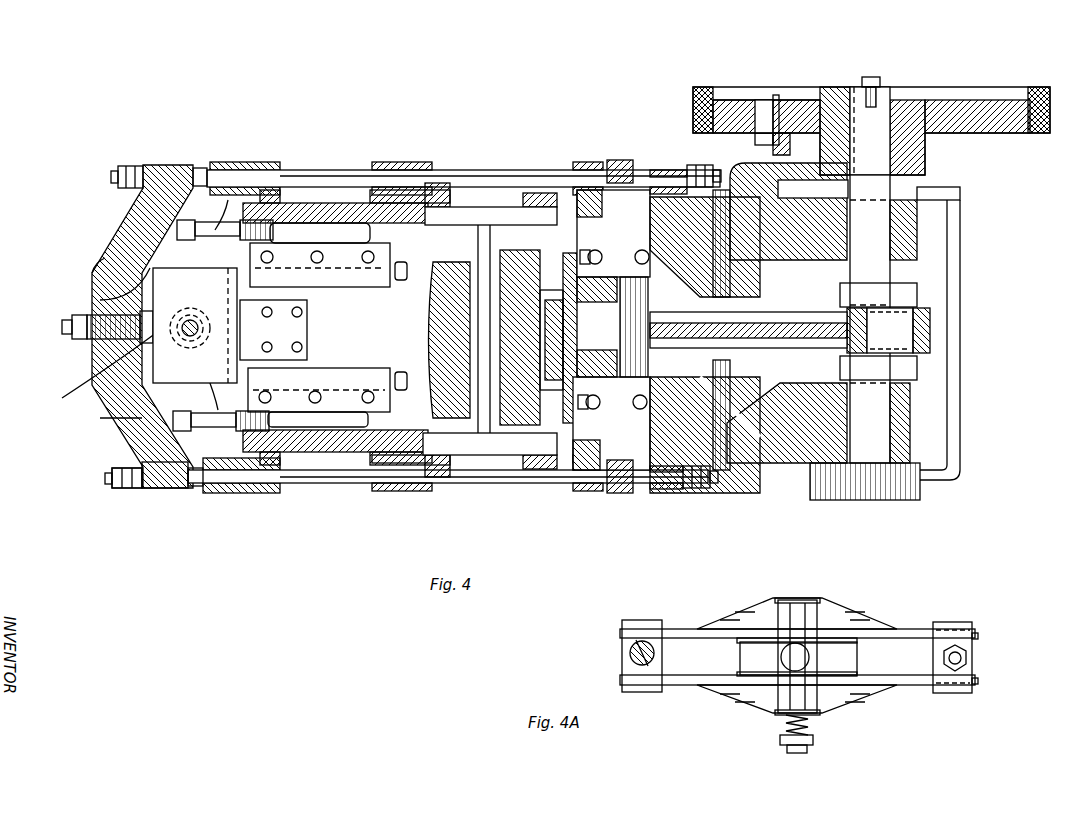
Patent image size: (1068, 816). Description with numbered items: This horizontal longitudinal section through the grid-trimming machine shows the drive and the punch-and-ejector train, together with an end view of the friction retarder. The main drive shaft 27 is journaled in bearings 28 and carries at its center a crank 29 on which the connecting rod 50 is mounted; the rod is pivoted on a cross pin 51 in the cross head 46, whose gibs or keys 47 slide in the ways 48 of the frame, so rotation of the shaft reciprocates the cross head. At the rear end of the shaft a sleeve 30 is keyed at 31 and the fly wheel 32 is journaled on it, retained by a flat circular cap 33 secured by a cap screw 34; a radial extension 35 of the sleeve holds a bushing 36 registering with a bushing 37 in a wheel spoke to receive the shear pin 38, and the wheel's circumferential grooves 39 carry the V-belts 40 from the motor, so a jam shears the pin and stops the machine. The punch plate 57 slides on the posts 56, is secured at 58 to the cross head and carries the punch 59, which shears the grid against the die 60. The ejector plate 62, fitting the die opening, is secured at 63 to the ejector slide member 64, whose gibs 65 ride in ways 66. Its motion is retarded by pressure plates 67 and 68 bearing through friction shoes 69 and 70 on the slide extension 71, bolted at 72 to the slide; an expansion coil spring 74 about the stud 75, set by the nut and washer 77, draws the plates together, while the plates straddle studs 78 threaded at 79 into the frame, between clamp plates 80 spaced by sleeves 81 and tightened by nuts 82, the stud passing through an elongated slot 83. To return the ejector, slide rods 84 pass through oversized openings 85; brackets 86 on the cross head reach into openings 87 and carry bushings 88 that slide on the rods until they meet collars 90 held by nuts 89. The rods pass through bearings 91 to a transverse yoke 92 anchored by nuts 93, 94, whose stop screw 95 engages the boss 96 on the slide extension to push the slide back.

In FIG. 4, the main drive shaft 27 is at (890, 193).
In FIG. 4, the bearings 28 is at (917, 222).
In FIG. 4, the crank 29 is at (918, 292).
In FIG. 4, the sleeve 30 is at (900, 100).
In FIG. 4, the key 31 is at (853, 87).
In FIG. 4, the fly wheel 32 is at (735, 100).
In FIG. 4, the flat circular cap 33 is at (835, 87).
In FIG. 4, the bolt 34 is at (872, 77).
In FIG. 4, the radial extension 35 is at (755, 138).
In FIG. 4, the bushing 36 is at (773, 145).
In FIG. 4, the bushing 37 is at (763, 100).
In FIG. 4, the shear pin 38 is at (778, 95).
In FIG. 4, the circumferential grooves 39 is at (703, 87).
In FIG. 4, the V-belts 40 is at (695, 95).
In FIG. 4, the cross head 46 is at (598, 277).
In FIG. 4, the gibs or keys 47 is at (600, 265).
In FIG. 4, the guides or ways 48 is at (640, 250).
In FIG. 4, the connecting rod 50 is at (825, 300).
In FIG. 4, the cross pin 51 is at (692, 322).
In FIG. 4, the posts 56 is at (545, 455).
In FIG. 4, the punch plate 57 is at (525, 250).
In FIG. 4, the securing means 58 is at (590, 425).
In FIG. 4, the punch 59 is at (520, 253).
In FIG. 4, the die 60 is at (462, 458).
In FIG. 4, the ejector plate 62 is at (432, 342).
In FIG. 4, the securing means 63 is at (420, 248).
In FIG. 4, the ejector slide member 64 is at (346, 327).
In FIG. 4, the gibs or keys 65 is at (360, 288).
In FIG. 4, the ways 66 is at (357, 243).
In FIG. 4A, the upper pressure plate 67 is at (892, 628).
In FIG. 4, the lower pressure plate 68 is at (110, 418).
In FIG. 4A, the lower pressure plate 68 is at (872, 682).
In FIG. 4A, the friction shoe 69 is at (738, 640).
In FIG. 4A, the friction shoe 70 is at (738, 670).
In FIG. 4, the slide extension 71 is at (195, 325).
In FIG. 4A, the slide extension 71 is at (857, 658).
In FIG. 4, the bolts 72 is at (300, 322).
In FIG. 4A, the expansion coil spring 74 is at (783, 720).
In FIG. 4, the stud 75 is at (188, 318).
In FIG. 4A, the nut and washer 77 is at (815, 740).
In FIG. 4, the studs 78 is at (150, 205).
In FIG. 4A, the studs 78 is at (630, 653).
In FIG. 4, the threaded connection 79 is at (298, 245).
In FIG. 4, the clamp plates 80 is at (235, 483).
In FIG. 4A, the clamp plates 80 is at (650, 622).
In FIG. 4, the spacing sleeves 81 is at (216, 230).
In FIG. 4A, the spacing sleeves 81 is at (630, 648).
In FIG. 4, the nuts 82 is at (148, 225).
In FIG. 4A, the nuts 82 is at (975, 648).
In FIG. 4, the elongated slot 83 is at (106, 368).
In FIG. 4, the slide rods 84 is at (505, 207).
In FIG. 4, the openings 85 is at (278, 163).
In FIG. 4, the brackets 86 is at (765, 205).
In FIG. 4, the openings 87 is at (620, 160).
In FIG. 4, the bushings 88 is at (660, 170).
In FIG. 4, the nuts 89 is at (700, 170).
In FIG. 4, the collars 90 is at (705, 165).
In FIG. 4, the bearings 91 is at (256, 162).
In FIG. 4, the transverse yoke 92 is at (92, 268).
In FIG. 4, the nut 93 is at (200, 490).
In FIG. 4, the nut 94 is at (132, 488).
In FIG. 4, the stop screw 95 is at (88, 340).
In FIG. 4, the boss 96 is at (100, 296).
In FIG. 4A, the boss 96 is at (781, 657).